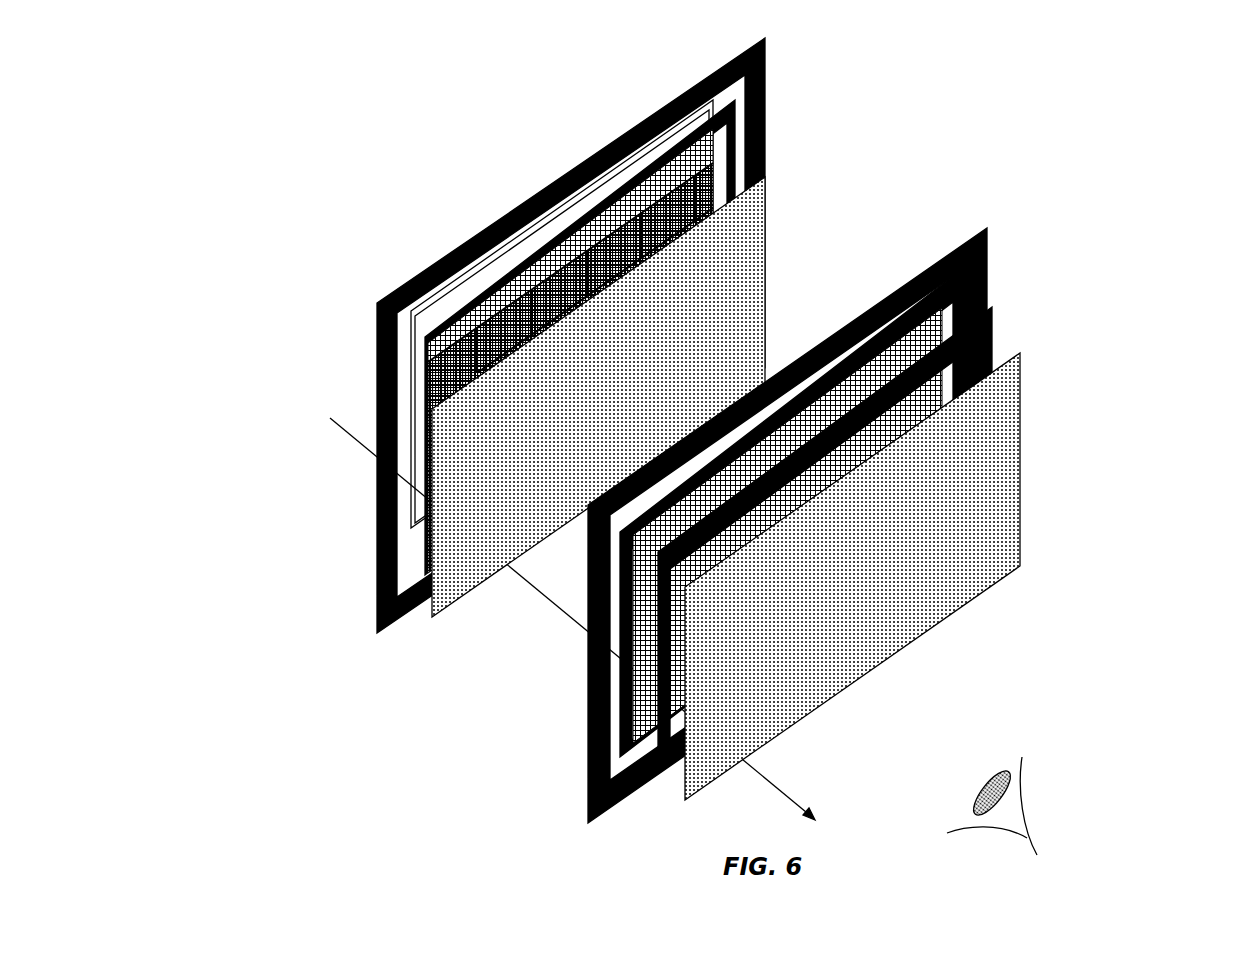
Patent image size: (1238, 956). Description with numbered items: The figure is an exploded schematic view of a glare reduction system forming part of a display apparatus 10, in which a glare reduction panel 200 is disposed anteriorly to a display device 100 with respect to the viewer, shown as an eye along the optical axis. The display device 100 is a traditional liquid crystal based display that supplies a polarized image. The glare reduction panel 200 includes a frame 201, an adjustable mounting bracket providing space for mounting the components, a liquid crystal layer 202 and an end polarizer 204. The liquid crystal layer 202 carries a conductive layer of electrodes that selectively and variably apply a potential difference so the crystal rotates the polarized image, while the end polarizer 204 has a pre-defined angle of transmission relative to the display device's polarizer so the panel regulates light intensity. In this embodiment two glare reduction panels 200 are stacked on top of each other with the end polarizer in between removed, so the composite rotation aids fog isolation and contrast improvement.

The display apparatus 10 is at (407, 175).
The display device 100 is at (818, 165).
The glare reduction panel 200 is at (1062, 480).
The frame 201 is at (988, 233).
The liquid crystal layer 202 is at (960, 300).
The end polarizer 204 is at (1020, 387).